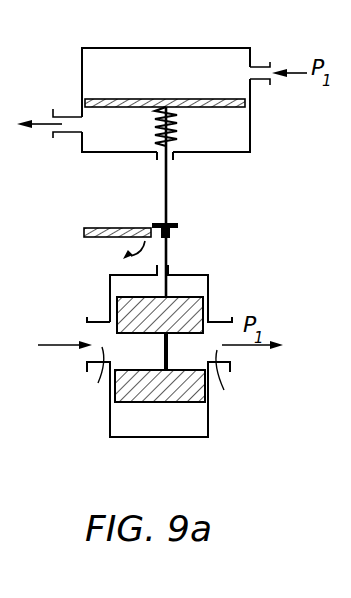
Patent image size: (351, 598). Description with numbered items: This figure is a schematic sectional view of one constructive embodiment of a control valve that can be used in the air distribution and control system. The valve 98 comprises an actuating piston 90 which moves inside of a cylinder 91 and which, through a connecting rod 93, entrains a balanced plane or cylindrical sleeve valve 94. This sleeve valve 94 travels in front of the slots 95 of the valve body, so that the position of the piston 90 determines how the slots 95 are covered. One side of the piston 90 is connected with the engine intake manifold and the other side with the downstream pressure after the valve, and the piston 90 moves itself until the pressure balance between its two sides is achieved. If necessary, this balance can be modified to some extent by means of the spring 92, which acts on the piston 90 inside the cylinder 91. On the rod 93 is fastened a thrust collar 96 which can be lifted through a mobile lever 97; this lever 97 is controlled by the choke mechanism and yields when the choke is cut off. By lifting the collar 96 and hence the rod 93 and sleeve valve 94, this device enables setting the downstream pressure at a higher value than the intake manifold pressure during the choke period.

The actuating piston 90 is at (246, 101).
The cylinder 91 is at (213, 48).
The spring 92 is at (177, 137).
The connecting rod 93 is at (167, 197).
The sleeve valve 94 is at (203, 306).
The slots 95 is at (163, 375).
The thrust collar 96 is at (172, 239).
The mobile lever 97 is at (115, 228).
The valve 98 is at (100, 420).